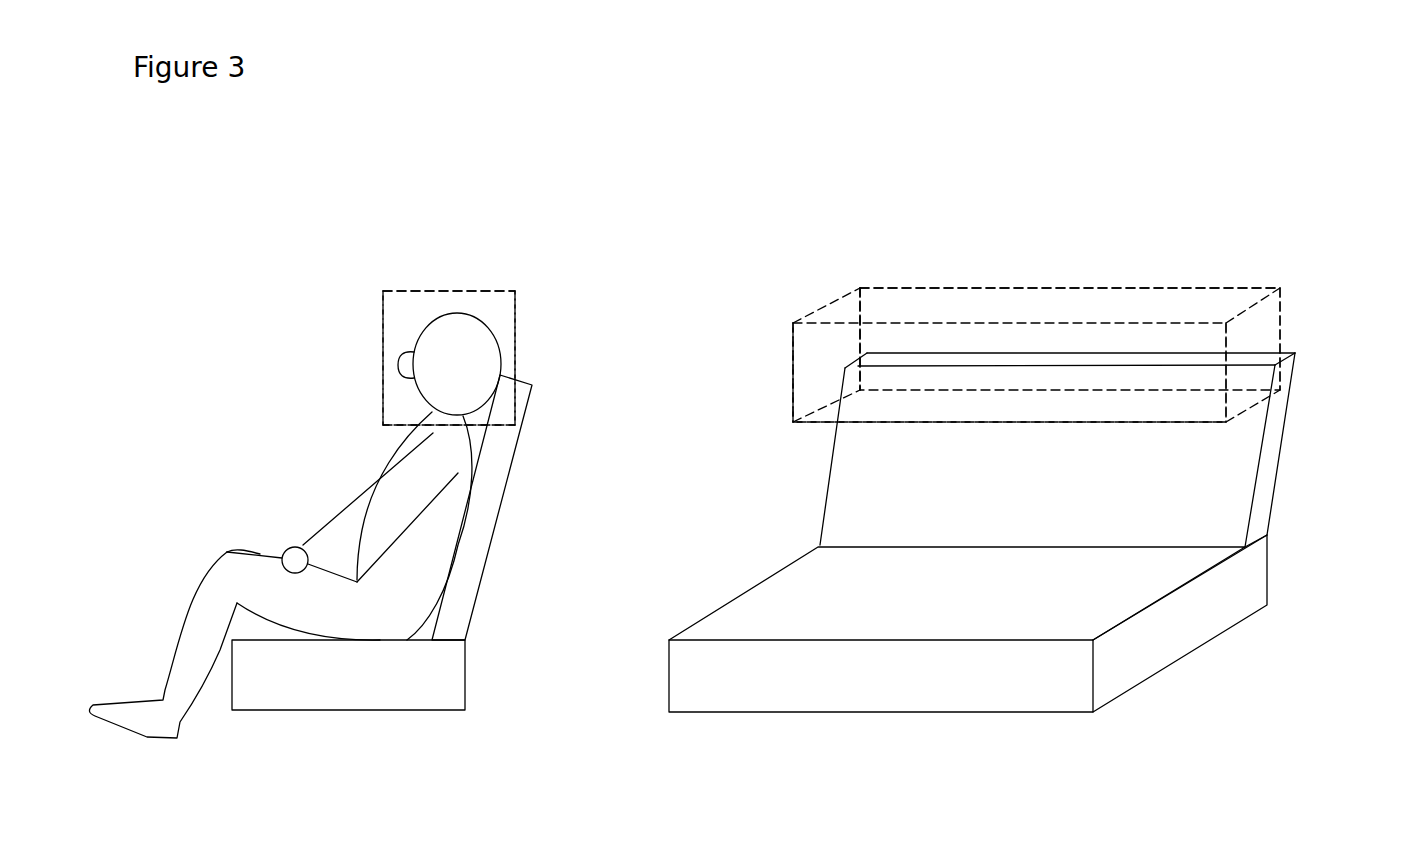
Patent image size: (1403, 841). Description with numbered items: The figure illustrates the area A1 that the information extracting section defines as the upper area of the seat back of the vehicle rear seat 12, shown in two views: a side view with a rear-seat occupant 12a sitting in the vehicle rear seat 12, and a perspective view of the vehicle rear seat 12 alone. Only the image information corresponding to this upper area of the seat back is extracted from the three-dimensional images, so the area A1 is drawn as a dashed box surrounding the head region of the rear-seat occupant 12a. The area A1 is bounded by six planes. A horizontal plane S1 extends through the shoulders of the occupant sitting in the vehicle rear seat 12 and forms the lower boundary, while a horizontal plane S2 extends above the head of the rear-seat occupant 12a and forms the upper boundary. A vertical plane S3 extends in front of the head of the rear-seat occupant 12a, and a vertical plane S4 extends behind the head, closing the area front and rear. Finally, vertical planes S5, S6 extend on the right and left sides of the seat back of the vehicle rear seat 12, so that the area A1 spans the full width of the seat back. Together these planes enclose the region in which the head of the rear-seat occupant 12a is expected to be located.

The vehicle rear seat 12 is at (512, 476).
The rear-seat occupant 12a is at (251, 548).
The area A1 is at (530, 278).
The horizontal plane S1 is at (388, 425).
The horizontal plane S2 is at (415, 288).
The vertical plane S3 is at (380, 313).
The vertical plane S4 is at (516, 345).
The vertical plane S5 is at (508, 403).
The vertical plane S6 is at (793, 377).